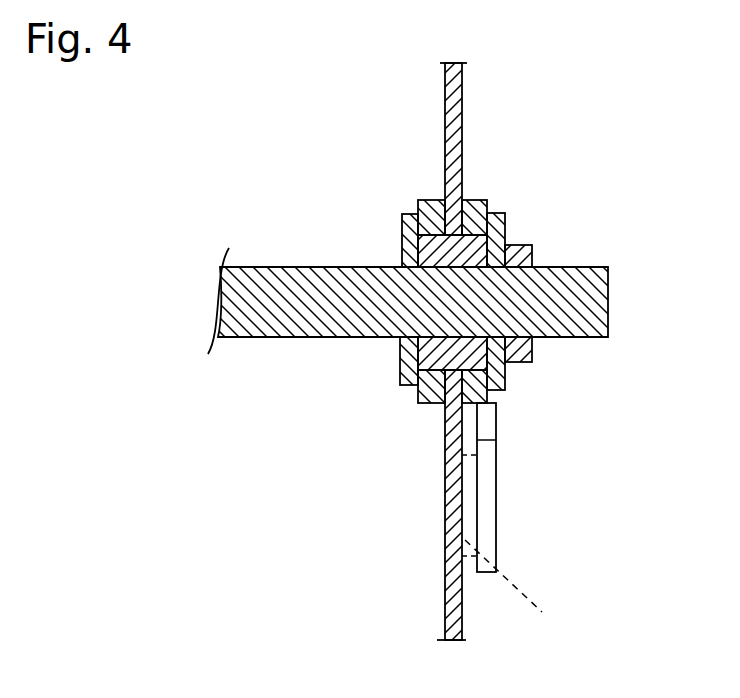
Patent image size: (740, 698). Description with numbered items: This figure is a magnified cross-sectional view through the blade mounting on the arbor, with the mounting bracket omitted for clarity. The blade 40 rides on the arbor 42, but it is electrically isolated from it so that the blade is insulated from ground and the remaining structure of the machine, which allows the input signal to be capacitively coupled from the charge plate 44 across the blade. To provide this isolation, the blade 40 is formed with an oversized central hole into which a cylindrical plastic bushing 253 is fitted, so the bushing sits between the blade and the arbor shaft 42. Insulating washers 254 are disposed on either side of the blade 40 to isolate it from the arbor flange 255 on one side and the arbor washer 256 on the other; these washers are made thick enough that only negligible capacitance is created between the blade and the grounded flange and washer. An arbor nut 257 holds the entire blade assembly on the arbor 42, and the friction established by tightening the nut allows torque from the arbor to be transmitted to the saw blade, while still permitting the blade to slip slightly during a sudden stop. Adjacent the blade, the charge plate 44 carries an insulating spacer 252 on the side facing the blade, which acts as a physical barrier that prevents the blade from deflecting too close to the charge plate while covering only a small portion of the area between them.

The blade 40 is at (445, 138).
The arbor 42 is at (290, 267).
The charge plate 44 is at (485, 498).
The insulating spacer 252 is at (527, 583).
The cylindrical plastic bushing 253 is at (413, 242).
The insulating washers 254 is at (477, 213).
The arbor flange 255 is at (408, 355).
The arbor washer 256 is at (502, 218).
The arbor nut 257 is at (530, 248).